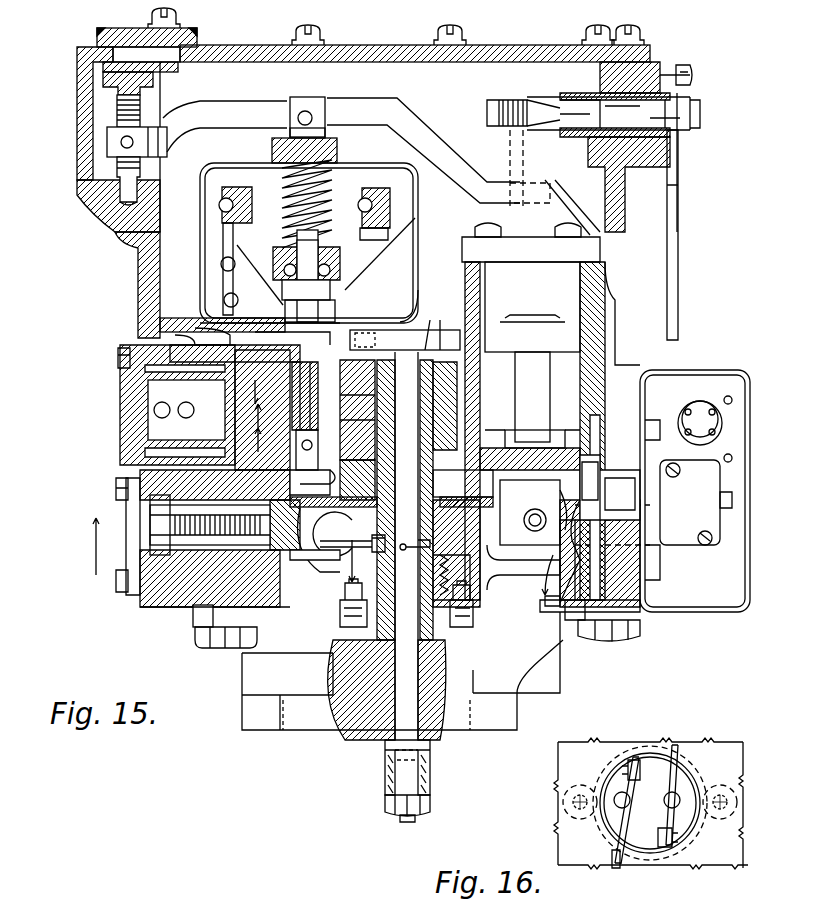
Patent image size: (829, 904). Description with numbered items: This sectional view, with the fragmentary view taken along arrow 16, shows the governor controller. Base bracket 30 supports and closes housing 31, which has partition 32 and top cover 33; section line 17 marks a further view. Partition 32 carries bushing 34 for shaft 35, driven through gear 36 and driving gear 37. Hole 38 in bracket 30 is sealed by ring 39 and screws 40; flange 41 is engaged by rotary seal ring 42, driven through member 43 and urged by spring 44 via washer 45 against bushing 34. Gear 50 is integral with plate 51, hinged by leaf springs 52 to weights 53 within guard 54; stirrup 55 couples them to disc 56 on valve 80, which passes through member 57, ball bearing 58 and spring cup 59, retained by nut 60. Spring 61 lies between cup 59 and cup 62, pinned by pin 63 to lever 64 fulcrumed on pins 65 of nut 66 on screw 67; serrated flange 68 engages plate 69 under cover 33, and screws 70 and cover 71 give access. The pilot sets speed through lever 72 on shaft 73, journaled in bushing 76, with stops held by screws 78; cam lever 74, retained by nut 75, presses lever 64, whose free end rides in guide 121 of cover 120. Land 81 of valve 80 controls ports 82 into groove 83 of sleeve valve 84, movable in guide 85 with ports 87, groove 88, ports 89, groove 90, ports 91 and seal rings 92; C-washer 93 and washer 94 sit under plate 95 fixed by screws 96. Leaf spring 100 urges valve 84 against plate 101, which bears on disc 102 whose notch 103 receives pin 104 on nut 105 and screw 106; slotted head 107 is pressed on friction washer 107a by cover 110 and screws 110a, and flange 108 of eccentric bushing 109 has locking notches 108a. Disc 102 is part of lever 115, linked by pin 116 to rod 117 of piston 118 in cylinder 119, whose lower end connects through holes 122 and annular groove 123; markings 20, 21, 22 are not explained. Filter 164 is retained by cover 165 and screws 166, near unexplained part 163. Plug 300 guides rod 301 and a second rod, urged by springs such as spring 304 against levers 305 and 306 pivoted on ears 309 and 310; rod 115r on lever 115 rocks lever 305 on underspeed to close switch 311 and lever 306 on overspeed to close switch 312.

In FIG. 15, the section line 16 is at (537, 575).
In FIG. 15, the section line 17 is at (217, 551).
In FIG. 15, the dimension 20 is at (245, 393).
In FIG. 15, the dimension 21 is at (246, 416).
In FIG. 15, the dimension 22 is at (246, 440).
In FIG. 15, the base 30 is at (535, 690).
In FIG. 15, the housing wall 31 is at (140, 264).
In FIG. 15, the shaft 32 is at (438, 338).
In FIG. 15, the top cover plate 33 is at (540, 45).
In FIG. 15, the sleeve 34 is at (436, 456).
In FIG. 15, the threaded stem 35 is at (432, 770).
In FIG. 15, the nut 36 is at (388, 770).
In FIG. 15, the rod 37 is at (430, 320).
In FIG. 15, the spindle 38 is at (445, 668).
In FIG. 15, the screw 39 is at (473, 596).
In FIG. 15, the plunger 40 is at (455, 592).
In FIG. 15, the screw 41 is at (338, 620).
In FIG. 15, the spring 42 is at (450, 575).
In FIG. 15, the pin 43 is at (418, 535).
In FIG. 15, the link 44 is at (372, 541).
In FIG. 15, the lever 45 is at (432, 540).
In FIG. 15, the base plate 50 is at (250, 336).
In FIG. 15, the arm 51 is at (418, 275).
In FIG. 15, the bar 52 is at (232, 282).
In FIG. 15, the pivot 53 is at (240, 225).
In FIG. 15, the housing 54 is at (418, 204).
In FIG. 15, the link 55 is at (250, 275).
In FIG. 15, the collar 56 is at (330, 290).
In FIG. 15, the arm 57 is at (372, 300).
In FIG. 15, the nut 58 is at (340, 272).
In FIG. 15, the rod 59 is at (320, 250).
In FIG. 15, the pivot block 60 is at (334, 236).
In FIG. 15, the spring 61 is at (336, 212).
In FIG. 15, the spring seat 62 is at (330, 148).
In FIG. 15, the pivot block 63 is at (308, 110).
In FIG. 15, the lever arm 64 is at (258, 110).
In FIG. 15, the adjusting screw 65 is at (110, 165).
In FIG. 15, the nut 66 is at (120, 142).
In FIG. 15, the threaded stud 67 is at (117, 112).
In FIG. 15, the cap 68 is at (103, 88).
In FIG. 15, the bracket 69 is at (170, 74).
In FIG. 15, the screw 70 is at (178, 14).
In FIG. 15, the cover block 71 is at (128, 30).
In FIG. 15, the bar 72 is at (678, 213).
In FIG. 15, the shaft 73 is at (575, 98).
In FIG. 15, the bracket 74 is at (512, 157).
In FIG. 15, the screw head 75 is at (530, 100).
In FIG. 15, the bushing 76 is at (695, 94).
In FIG. 15, the screw 78 is at (690, 70).
In FIG. 15, the guide 80 is at (338, 312).
In FIG. 15, the rod 81 is at (309, 396).
In FIG. 15, the sleeve 82 is at (357, 413).
In FIG. 15, the body 83 is at (262, 445).
In FIG. 15, the pin 84 is at (307, 452).
In FIG. 15, the recess 85 is at (288, 480).
In FIG. 15, the wall 87 is at (262, 462).
In FIG. 15, the bushing 88 is at (357, 410).
In FIG. 15, the ring 89 is at (357, 398).
In FIG. 15, the rod 90 is at (307, 396).
In FIG. 15, the sleeve 91 is at (305, 396).
In FIG. 15, the bushing 92 is at (357, 468).
In FIG. 15, the plate 93 is at (378, 346).
In FIG. 15, the slot 94 is at (373, 337).
In FIG. 15, the plate 95 is at (185, 348).
In FIG. 15, the lug 96 is at (184, 340).
In FIG. 15, the spring 100 is at (340, 480).
In FIG. 15, the plate 101 is at (470, 480).
In FIG. 15, the plate 102 is at (335, 510).
In FIG. 15, the block 103 is at (305, 565).
In FIG. 15, the cam 104 is at (324, 560).
In FIG. 15, the nut 105 is at (258, 628).
In FIG. 15, the body 106 is at (200, 492).
In FIG. 15, the flange 107 is at (150, 545).
In FIG. 15, the adjusting screw 107a is at (160, 525).
In FIG. 15, the screw 108 is at (140, 585).
In FIG. 15, the lug 108a is at (175, 592).
In FIG. 15, the bushing 109 is at (232, 470).
In FIG. 15, the plate 110 is at (130, 510).
In FIG. 15, the screw 110a is at (116, 486).
In FIG. 15, the passage 115 is at (541, 567).
In FIG. 15, the passage 115r is at (556, 508).
In FIG. 15, the valve 116 is at (522, 520).
In FIG. 15, the piston rod 117 is at (545, 410).
In FIG. 15, the piston 118 is at (556, 338).
In FIG. 15, the cylinder 119 is at (598, 308).
In FIG. 15, the cylinder head 120 is at (598, 255).
In FIG. 15, the bracket 121 is at (580, 196).
In FIG. 15, the collar 122 is at (548, 448).
In FIG. 15, the seal 123 is at (505, 458).
In FIG. 15, the gasket 163 is at (145, 372).
In FIG. 15, the block 164 is at (148, 405).
In FIG. 15, the gasket 165 is at (145, 452).
In FIG. 15, the screw 166 is at (118, 356).
In FIG. 15, the switch body 300 is at (598, 484).
In FIG. 15, the switch housing 301 is at (640, 540).
In FIG. 15, the switch 304 is at (640, 512).
In FIG. 15, the contact plate 305 is at (575, 590).
In FIG. 16, the contact plate 305 is at (675, 778).
In FIG. 15, the contact plate 306 is at (556, 598).
In FIG. 16, the contact plate 306 is at (616, 866).
In FIG. 15, the terminal 309 is at (605, 575).
In FIG. 16, the terminal 309 is at (668, 848).
In FIG. 15, the contact arm 310 is at (596, 455).
In FIG. 16, the contact arm 310 is at (640, 757).
In FIG. 16, the hole 311 is at (676, 806).
In FIG. 16, the hole 312 is at (626, 806).